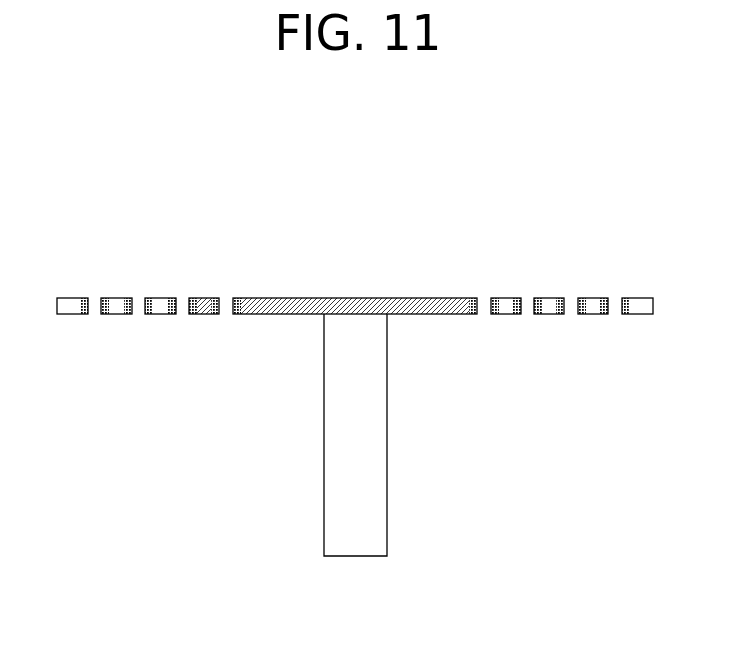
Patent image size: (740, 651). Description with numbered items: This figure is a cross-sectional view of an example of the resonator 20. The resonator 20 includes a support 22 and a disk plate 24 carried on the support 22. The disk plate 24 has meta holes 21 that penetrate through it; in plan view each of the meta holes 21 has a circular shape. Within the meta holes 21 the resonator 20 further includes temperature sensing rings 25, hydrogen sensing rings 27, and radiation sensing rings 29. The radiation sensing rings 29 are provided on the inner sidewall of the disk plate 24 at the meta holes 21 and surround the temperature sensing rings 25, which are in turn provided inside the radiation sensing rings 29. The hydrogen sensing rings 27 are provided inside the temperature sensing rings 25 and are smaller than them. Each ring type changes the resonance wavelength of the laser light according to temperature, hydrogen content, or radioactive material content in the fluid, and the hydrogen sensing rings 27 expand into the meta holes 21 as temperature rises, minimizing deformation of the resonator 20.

The resonator 20 is at (662, 208).
The meta holes 21 is at (227, 296).
The support 22 is at (366, 325).
The disk plate 24 is at (504, 305).
The hydrogen sensing rings 27 is at (537, 305).
The temperature sensing rings 25 is at (582, 305).
The radiation sensing rings 29 is at (628, 305).